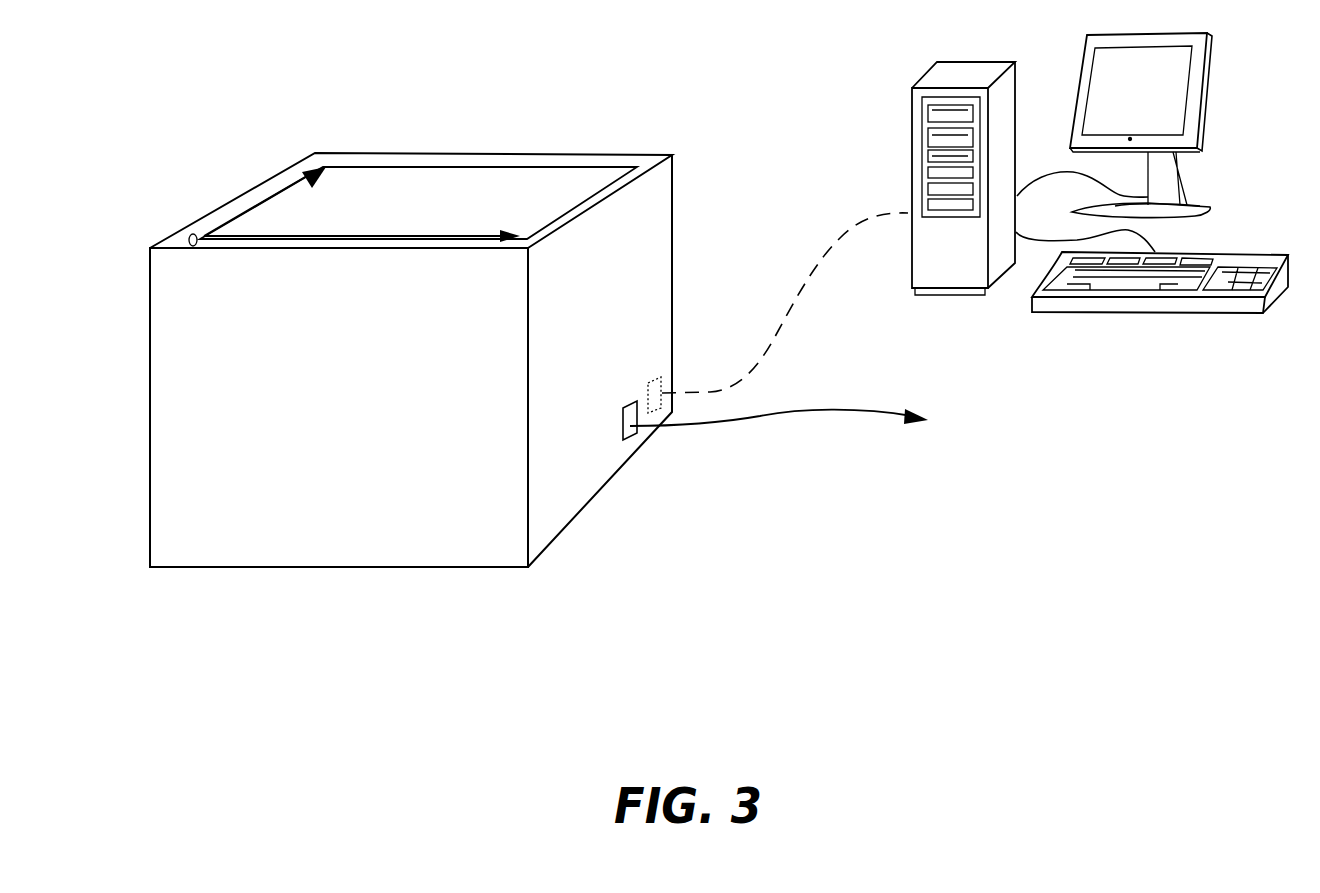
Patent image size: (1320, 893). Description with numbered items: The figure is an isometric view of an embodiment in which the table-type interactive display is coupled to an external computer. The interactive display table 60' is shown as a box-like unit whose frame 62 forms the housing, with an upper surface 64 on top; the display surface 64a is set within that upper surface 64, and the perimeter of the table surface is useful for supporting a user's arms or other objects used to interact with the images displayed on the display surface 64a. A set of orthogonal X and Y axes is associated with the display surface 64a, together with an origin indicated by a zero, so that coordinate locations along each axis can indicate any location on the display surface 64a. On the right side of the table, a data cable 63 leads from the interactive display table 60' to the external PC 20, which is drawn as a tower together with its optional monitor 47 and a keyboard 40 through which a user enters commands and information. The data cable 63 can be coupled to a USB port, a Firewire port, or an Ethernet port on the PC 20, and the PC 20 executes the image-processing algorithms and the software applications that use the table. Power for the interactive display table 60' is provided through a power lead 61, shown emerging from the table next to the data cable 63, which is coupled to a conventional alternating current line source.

The PC 20 is at (975, 62).
The monitor 47 is at (1208, 85).
The keyboard 40 is at (1250, 252).
The interactive display table 60' is at (678, 285).
The frame 62 is at (150, 362).
The upper surface 64 is at (297, 182).
The display surface 64a is at (437, 214).
The power lead 61 is at (783, 411).
The data cable 63 is at (800, 297).